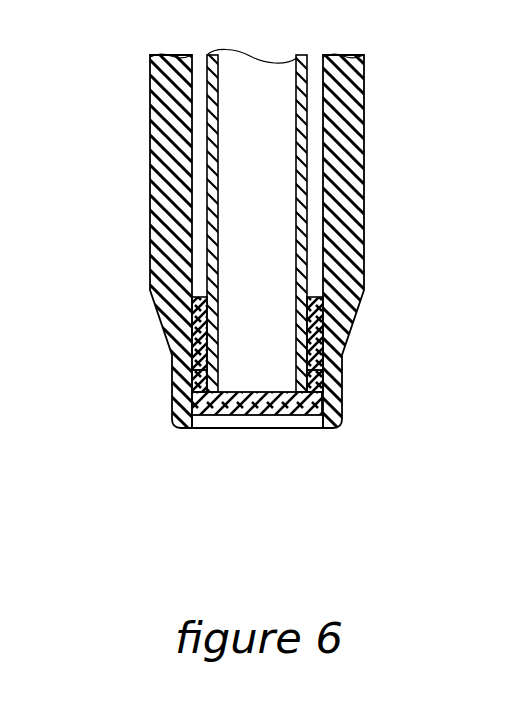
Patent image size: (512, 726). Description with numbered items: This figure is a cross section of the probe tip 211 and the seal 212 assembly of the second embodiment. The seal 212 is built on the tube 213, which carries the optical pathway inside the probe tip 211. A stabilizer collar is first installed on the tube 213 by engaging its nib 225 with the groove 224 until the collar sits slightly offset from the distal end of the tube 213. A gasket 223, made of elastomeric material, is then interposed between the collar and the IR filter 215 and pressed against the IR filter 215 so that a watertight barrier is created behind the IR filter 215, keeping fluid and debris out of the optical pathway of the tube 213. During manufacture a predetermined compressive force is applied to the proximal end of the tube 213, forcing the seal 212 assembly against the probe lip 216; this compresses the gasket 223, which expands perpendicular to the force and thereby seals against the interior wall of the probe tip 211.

The probe tip 211 is at (372, 255).
The seal 212 is at (140, 285).
The tube 213 is at (216, 231).
The IR filter 215 is at (298, 415).
The probe lip 216 is at (195, 420).
The gasket 223 is at (200, 372).
The groove 224 is at (312, 306).
The nib 225 is at (198, 322).